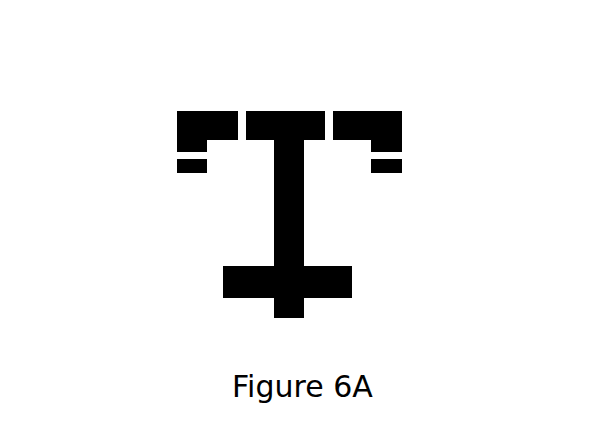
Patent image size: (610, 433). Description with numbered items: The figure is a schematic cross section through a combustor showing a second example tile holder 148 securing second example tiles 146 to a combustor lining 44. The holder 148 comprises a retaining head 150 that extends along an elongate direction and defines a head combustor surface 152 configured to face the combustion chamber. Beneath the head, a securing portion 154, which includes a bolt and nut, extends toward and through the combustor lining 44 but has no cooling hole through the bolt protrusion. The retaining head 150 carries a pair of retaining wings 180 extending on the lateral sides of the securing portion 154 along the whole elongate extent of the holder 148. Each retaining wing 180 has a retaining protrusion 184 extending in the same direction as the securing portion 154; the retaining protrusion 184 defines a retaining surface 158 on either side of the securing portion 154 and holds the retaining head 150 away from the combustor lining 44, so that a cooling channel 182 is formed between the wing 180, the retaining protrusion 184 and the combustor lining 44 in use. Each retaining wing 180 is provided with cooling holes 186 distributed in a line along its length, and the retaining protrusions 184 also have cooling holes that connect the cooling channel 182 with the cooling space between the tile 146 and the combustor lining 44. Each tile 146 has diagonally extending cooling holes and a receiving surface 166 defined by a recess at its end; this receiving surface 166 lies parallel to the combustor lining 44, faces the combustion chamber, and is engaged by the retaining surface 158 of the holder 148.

The second example tile holder 148 is at (170, 100).
The retaining wings 180 is at (217, 110).
The cooling holes 186 is at (240, 123).
The head combustor surface 152 is at (300, 109).
The retaining head 150 is at (370, 110).
The second example tile 146 is at (513, 117).
The retaining protrusion 184 is at (180, 147).
The retaining surface 158 is at (194, 176).
The cooling channel 182 is at (222, 157).
The securing portion 154 is at (212, 273).
The receiving surface 166 is at (357, 168).
The combustor lining 44 is at (437, 238).